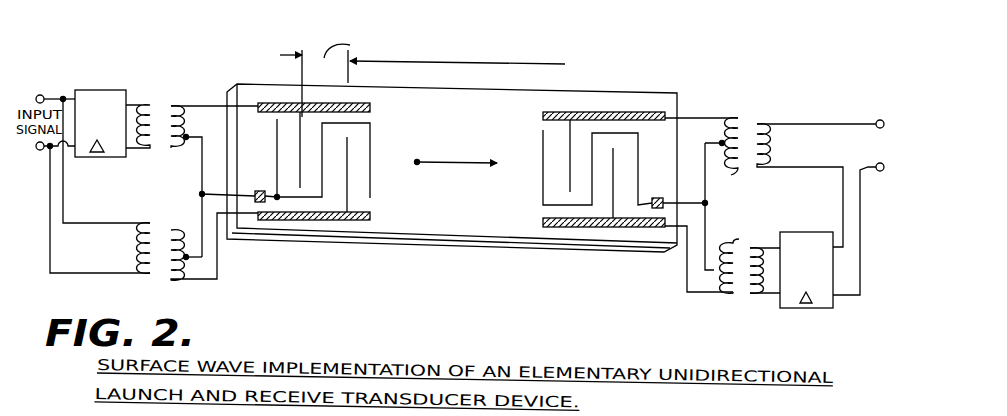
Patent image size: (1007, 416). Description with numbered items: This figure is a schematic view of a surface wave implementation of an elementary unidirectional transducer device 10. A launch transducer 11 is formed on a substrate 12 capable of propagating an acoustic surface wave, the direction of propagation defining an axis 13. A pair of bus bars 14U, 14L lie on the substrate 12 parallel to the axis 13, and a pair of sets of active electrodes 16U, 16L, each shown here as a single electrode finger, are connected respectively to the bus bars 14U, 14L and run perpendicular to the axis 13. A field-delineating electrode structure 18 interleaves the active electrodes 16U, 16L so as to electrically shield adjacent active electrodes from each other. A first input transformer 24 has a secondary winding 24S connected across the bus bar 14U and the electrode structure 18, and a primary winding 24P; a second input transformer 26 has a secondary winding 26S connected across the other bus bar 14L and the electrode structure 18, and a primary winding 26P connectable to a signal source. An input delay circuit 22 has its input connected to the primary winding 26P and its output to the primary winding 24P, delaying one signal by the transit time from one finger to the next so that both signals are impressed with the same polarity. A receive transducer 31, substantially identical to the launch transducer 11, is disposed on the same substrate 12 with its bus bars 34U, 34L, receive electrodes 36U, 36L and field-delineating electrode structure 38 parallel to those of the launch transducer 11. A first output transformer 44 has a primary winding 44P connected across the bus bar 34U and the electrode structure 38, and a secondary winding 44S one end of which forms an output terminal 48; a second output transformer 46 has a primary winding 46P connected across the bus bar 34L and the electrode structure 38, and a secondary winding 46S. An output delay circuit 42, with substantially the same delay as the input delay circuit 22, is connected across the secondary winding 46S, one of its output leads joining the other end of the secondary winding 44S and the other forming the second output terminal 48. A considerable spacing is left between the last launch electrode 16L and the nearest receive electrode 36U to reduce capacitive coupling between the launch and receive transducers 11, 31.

The unidirectional transducer device 10 is at (262, 53).
The launch transducer 11 is at (303, 100).
The substrate 12 is at (450, 244).
The axis 13 is at (443, 164).
The bus bar 14U is at (370, 108).
The bus bar 14L is at (370, 218).
The set of active electrodes 16U is at (293, 121).
The set of active electrodes 16L is at (370, 198).
The field-delineating electrode structure 18 is at (277, 163).
The input delay circuit 22 is at (95, 89).
The first input transformer 24 is at (166, 69).
The primary winding 24P is at (150, 148).
The secondary winding 24S is at (171, 148).
The second input transformer 26 is at (140, 202).
The primary winding 26P is at (150, 273).
The secondary winding 26S is at (171, 279).
The receive transducer 31 is at (592, 108).
The bus bar 34U is at (543, 114).
The bus bar 34L is at (543, 222).
The receive electrode 36U is at (570, 127).
The receive electrode 36L is at (614, 168).
The field-delineating electrode structure 38 is at (543, 180).
The output delay circuit 42 is at (816, 308).
The first output transformer 44 is at (739, 89).
The primary winding 44P is at (722, 133).
The secondary winding 44S is at (795, 124).
The second output transformer 46 is at (775, 213).
The primary winding 46P is at (740, 283).
The secondary winding 46S is at (752, 295).
The output terminal 48 is at (885, 166).